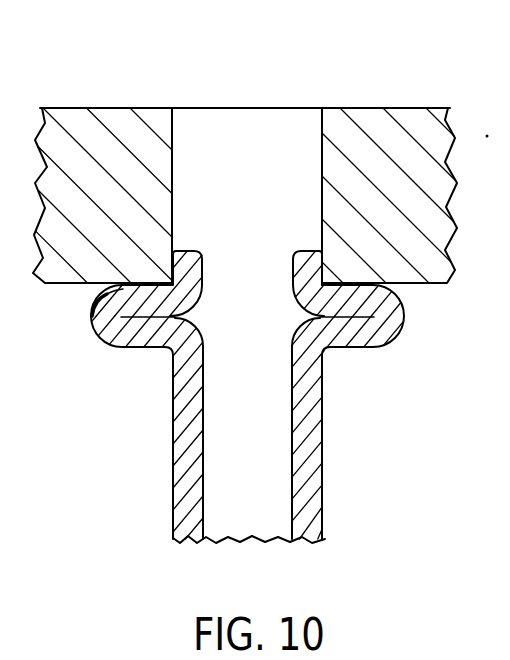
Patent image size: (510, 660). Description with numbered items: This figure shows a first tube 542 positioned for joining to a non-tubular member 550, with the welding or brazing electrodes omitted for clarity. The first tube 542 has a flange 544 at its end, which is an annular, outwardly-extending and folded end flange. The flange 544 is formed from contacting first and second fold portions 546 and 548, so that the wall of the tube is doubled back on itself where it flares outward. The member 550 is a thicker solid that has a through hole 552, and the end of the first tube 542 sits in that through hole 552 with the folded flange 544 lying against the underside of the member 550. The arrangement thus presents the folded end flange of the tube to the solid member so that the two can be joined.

The first tube 542 is at (326, 478).
The flange 544 is at (362, 346).
The first fold portion 546 is at (135, 347).
The second fold portion 548 is at (92, 313).
The member 550 is at (377, 109).
The through hole 552 is at (258, 113).